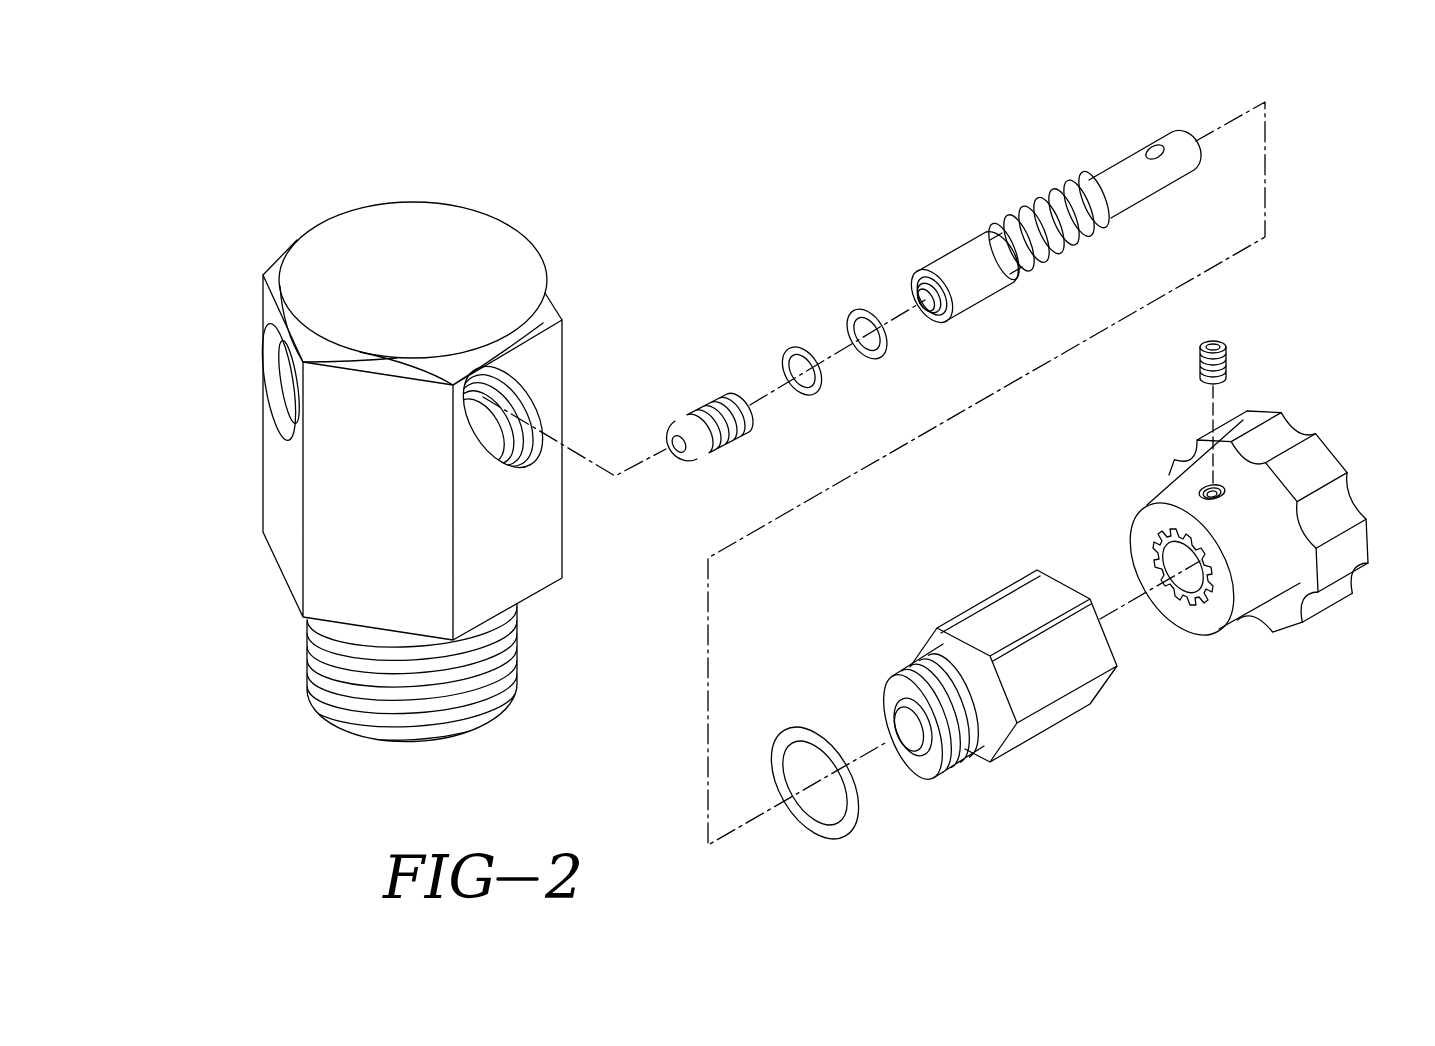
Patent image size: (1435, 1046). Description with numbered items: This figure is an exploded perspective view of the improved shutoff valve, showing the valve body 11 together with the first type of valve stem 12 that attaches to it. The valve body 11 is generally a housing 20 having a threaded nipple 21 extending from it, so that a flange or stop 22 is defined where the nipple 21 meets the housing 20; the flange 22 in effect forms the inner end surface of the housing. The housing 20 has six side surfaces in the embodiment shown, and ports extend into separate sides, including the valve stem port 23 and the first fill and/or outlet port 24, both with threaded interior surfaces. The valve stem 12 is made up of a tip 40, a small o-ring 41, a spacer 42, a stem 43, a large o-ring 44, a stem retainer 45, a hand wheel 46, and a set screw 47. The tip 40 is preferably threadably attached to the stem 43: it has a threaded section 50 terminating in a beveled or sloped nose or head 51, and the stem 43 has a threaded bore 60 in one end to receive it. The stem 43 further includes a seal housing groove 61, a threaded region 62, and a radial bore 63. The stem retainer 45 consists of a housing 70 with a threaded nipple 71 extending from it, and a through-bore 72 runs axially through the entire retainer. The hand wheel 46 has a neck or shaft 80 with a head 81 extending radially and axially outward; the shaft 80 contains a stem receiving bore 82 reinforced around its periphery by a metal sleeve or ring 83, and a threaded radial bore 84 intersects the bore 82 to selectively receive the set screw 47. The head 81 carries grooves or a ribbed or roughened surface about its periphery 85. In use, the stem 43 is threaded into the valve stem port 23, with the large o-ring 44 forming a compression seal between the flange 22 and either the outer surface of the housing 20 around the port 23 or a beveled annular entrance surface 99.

The valve body 11 is at (288, 573).
The valve stem 12 is at (808, 201).
The housing 20 is at (480, 235).
The threaded nipple 21 is at (518, 690).
The flange or stop 22 is at (540, 593).
The valve stem port 23 is at (538, 410).
The first fill and/or outlet port 24 is at (280, 387).
The tip 40 is at (700, 408).
The small o-ring 41 is at (787, 347).
The spacer 42 is at (858, 312).
The stem 43 is at (1030, 205).
The large o-ring 44 is at (790, 733).
The stem retainer 45 is at (984, 590).
The hand wheel 46 is at (1293, 418).
The set screw 47 is at (1218, 340).
The threaded section 50 is at (725, 438).
The nose or head 51 is at (688, 460).
The threaded bore 60 is at (930, 315).
The seal housing groove 61 is at (1022, 268).
The threaded region 62 is at (1082, 240).
The radial bore 63 is at (1153, 150).
The housing 70 is at (1043, 727).
The threaded nipple 71 is at (957, 762).
The through-bore 72 is at (907, 718).
The neck or shaft 80 is at (1238, 622).
The head 81 is at (1348, 505).
The stem receiving bore 82 is at (1180, 557).
The metal sleeve or ring 83 is at (1180, 603).
The threaded radial bore 84 is at (1200, 488).
The periphery 85 is at (1320, 455).
The beveled annular entrance surface 99 is at (508, 452).